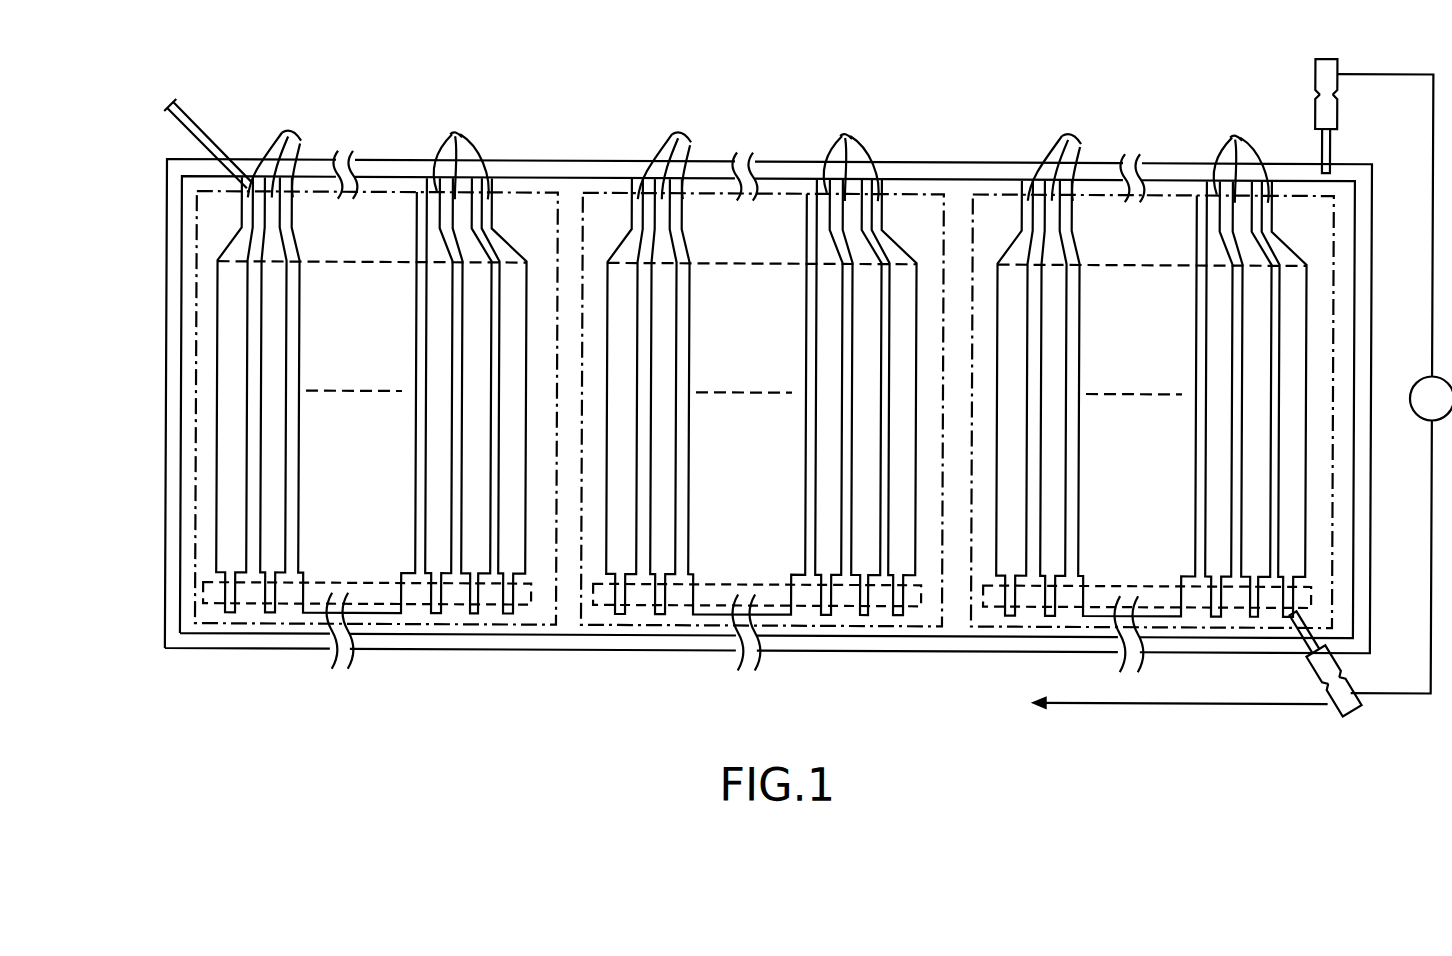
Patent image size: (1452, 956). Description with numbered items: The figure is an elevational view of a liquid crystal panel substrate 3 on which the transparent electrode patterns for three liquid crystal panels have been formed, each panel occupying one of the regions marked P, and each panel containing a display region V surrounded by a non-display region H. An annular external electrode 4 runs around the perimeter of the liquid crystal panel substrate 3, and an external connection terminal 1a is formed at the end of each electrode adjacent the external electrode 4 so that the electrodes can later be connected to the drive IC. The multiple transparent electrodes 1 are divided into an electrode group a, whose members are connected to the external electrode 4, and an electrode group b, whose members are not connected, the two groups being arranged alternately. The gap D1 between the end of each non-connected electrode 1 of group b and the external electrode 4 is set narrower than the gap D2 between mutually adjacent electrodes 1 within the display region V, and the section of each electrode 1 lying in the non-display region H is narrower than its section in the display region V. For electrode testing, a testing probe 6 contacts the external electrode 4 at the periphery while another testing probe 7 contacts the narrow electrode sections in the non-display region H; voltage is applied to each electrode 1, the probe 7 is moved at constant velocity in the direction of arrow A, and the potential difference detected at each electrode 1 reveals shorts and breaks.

The transparent electrode 1 is at (267, 390).
The external connection terminal 1a is at (758, 149).
The liquid crystal panel substrate 3 is at (938, 153).
The external electrode 4 is at (570, 166).
The testing probe 6 is at (1318, 60).
The testing probe 7 is at (1342, 702).
The electrode group A a is at (435, 410).
The electrode group B b is at (230, 466).
The gap D1 is at (152, 145).
The gap D2 is at (208, 285).
The non-display region H is at (216, 604).
The liquid crystal panel region P is at (512, 623).
The display region V is at (899, 382).
The arrow A is at (1168, 700).